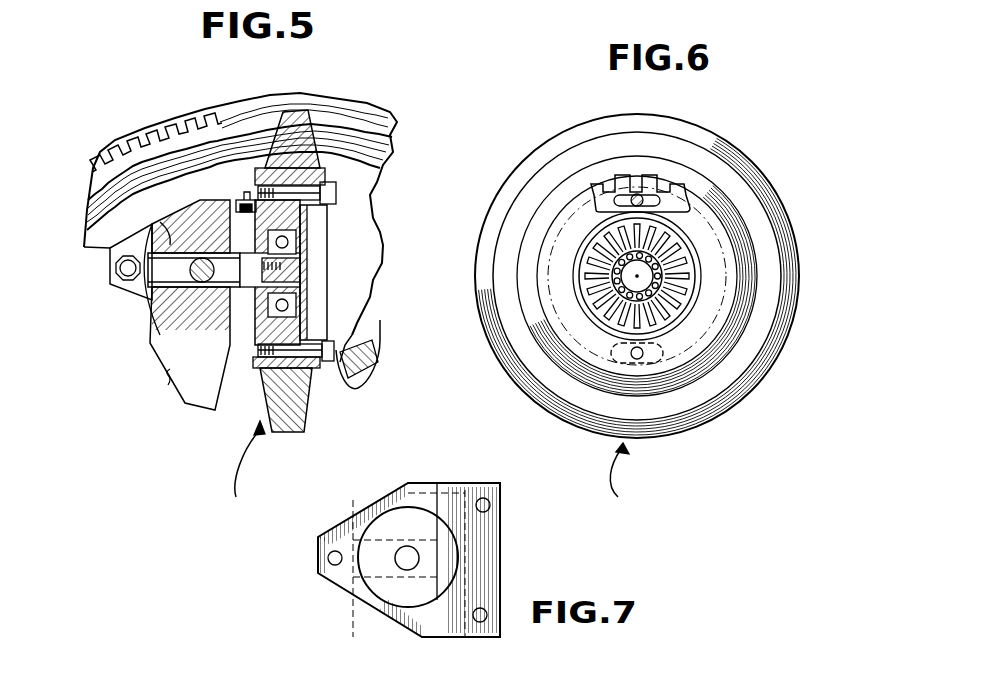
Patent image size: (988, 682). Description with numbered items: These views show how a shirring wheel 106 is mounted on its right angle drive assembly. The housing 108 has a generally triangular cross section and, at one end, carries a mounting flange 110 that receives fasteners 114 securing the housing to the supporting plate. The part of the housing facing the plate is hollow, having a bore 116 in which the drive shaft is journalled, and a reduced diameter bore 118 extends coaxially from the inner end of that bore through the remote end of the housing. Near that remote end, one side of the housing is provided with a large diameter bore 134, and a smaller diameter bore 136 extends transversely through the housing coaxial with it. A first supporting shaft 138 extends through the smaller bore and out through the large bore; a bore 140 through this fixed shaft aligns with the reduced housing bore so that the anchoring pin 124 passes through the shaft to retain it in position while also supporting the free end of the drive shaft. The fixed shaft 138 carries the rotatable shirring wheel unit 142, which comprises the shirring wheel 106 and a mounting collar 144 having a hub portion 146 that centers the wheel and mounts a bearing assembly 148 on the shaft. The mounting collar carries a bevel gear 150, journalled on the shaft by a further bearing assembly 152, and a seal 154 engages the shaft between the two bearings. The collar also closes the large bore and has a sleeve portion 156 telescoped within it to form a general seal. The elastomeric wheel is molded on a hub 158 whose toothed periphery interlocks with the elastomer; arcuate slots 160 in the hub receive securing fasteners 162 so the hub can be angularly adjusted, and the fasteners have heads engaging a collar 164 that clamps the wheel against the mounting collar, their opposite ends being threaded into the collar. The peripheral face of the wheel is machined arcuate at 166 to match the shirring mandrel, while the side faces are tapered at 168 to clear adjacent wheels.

In FIG. 5, the shirring wheel 106 is at (318, 420).
In FIG. 6, the shirring wheel 106 is at (700, 158).
In FIG. 5, the housing 108 is at (150, 358).
In FIG. 7, the housing 108 is at (432, 487).
In FIG. 7, the mounting flange 110 is at (340, 522).
In FIG. 5, the fasteners 114 is at (118, 283).
In FIG. 7, the bore 116 is at (400, 623).
In FIG. 7, the reduced diameter bore 118 is at (405, 570).
In FIG. 5, the anchoring pin 124 is at (168, 385).
In FIG. 5, the large diameter bore 134 is at (238, 200).
In FIG. 5, the smaller diameter bore 136 is at (168, 228).
In FIG. 7, the smaller diameter bore 136 is at (362, 602).
In FIG. 5, the first supporting shaft 138 is at (150, 333).
In FIG. 5, the bore 140 is at (188, 222).
In FIG. 5, the shirring wheel unit 142 is at (234, 480).
In FIG. 6, the shirring wheel unit 142 is at (640, 475).
In FIG. 5, the mounting collar 144 is at (242, 300).
In FIG. 6, the mounting collar 144 is at (727, 207).
In FIG. 5, the hub portion 146 is at (350, 320).
In FIG. 5, the bearing assembly 148 is at (343, 290).
In FIG. 5, the bevel gear 150 is at (224, 300).
In FIG. 6, the bevel gear 150 is at (664, 318).
In FIG. 5, the bearing assembly 152 is at (222, 415).
In FIG. 6, the bearing assembly 152 is at (597, 247).
In FIG. 5, the seal 154 is at (313, 282).
In FIG. 5, the sleeve portion 156 is at (246, 200).
In FIG. 6, the sleeve portion 156 is at (586, 318).
In FIG. 6, the hub 158 is at (604, 207).
In FIG. 6, the arcuate slots 160 is at (638, 195).
In FIG. 5, the securing fasteners 162 is at (336, 190).
In FIG. 6, the securing fasteners 162 is at (655, 195).
In FIG. 5, the collar 164 is at (325, 166).
In FIG. 5, the arcuate peripheral face 166 is at (270, 432).
In FIG. 5, the tapered side faces 168 is at (308, 426).